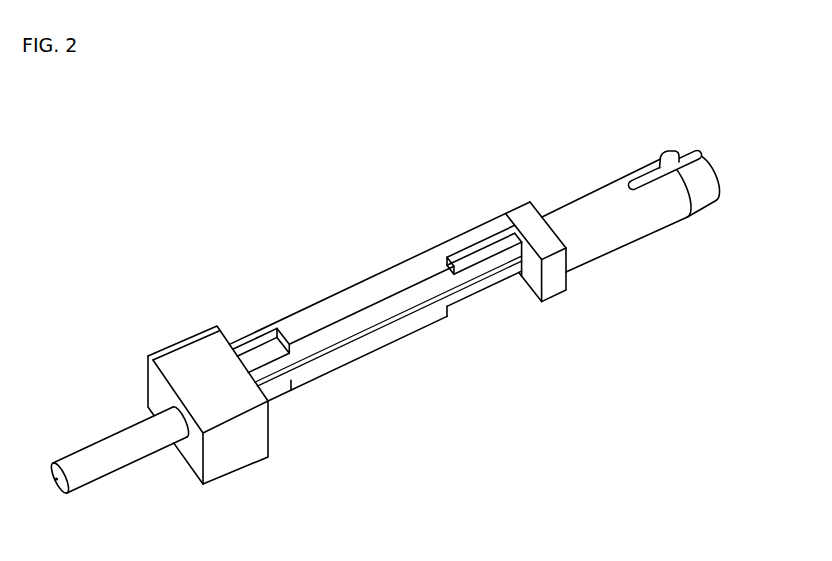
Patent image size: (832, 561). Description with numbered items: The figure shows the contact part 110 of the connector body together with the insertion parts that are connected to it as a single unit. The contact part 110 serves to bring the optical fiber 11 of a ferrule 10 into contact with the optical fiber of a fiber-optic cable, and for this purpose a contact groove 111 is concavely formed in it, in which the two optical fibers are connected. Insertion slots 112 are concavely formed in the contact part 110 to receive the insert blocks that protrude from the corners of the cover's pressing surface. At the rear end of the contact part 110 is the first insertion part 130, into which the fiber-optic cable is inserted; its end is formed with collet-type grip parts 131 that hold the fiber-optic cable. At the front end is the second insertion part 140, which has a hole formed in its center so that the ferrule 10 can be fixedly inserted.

The ferrule 10 is at (88, 467).
The optical fiber 11 is at (313, 362).
The contact part 110 is at (407, 275).
The contact groove 111 is at (383, 327).
The insertion slots 112 is at (260, 327).
The first insertion part 130 is at (595, 233).
The collet-type grip parts 131 is at (680, 150).
The second insertion part 140 is at (232, 450).